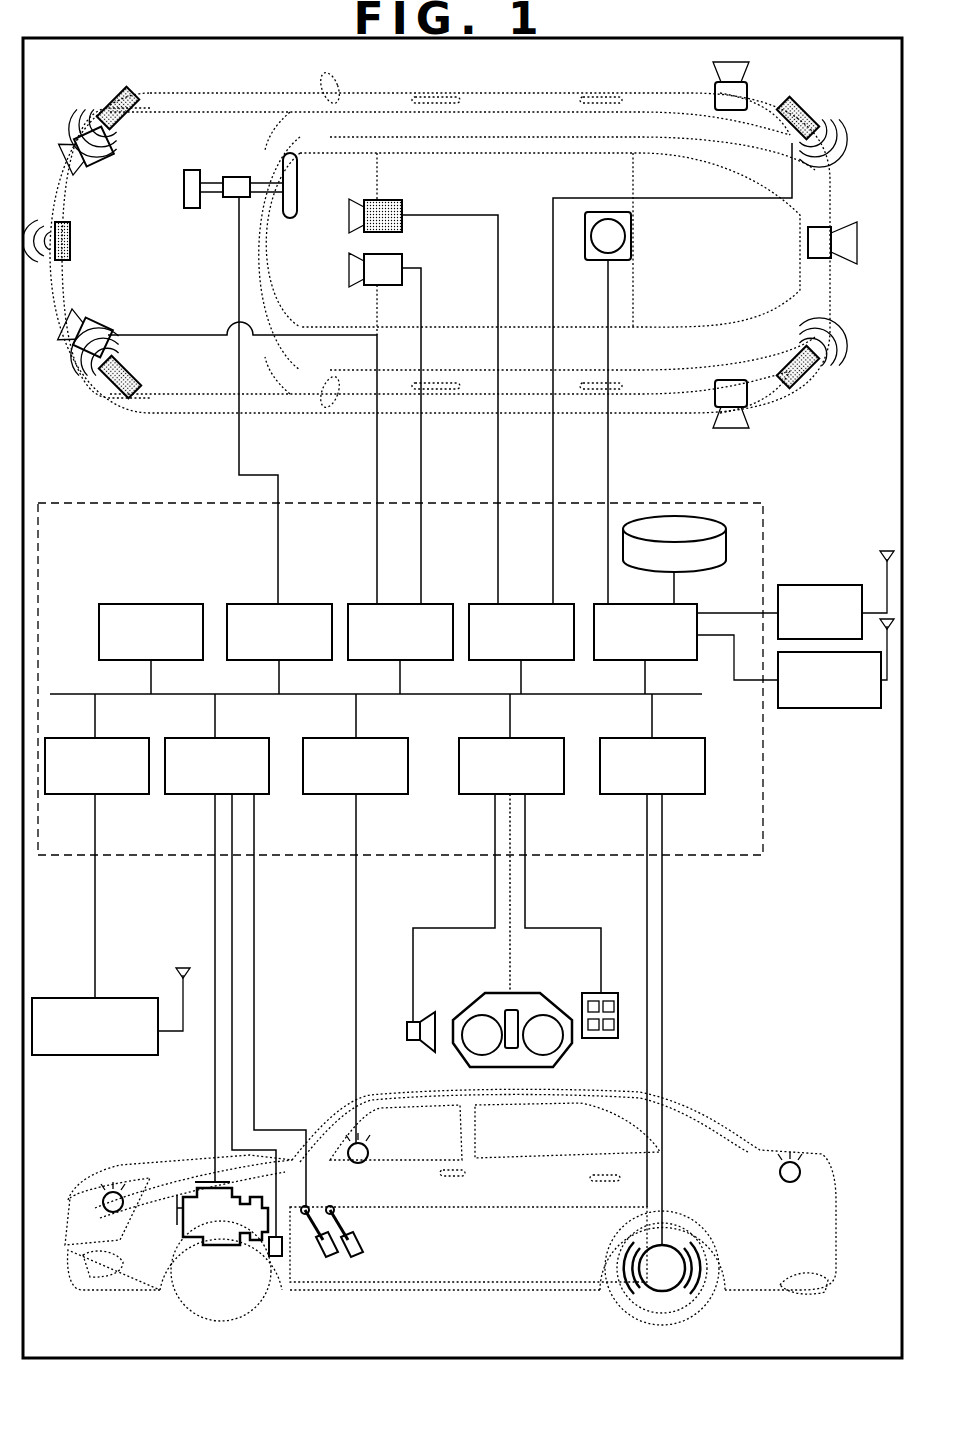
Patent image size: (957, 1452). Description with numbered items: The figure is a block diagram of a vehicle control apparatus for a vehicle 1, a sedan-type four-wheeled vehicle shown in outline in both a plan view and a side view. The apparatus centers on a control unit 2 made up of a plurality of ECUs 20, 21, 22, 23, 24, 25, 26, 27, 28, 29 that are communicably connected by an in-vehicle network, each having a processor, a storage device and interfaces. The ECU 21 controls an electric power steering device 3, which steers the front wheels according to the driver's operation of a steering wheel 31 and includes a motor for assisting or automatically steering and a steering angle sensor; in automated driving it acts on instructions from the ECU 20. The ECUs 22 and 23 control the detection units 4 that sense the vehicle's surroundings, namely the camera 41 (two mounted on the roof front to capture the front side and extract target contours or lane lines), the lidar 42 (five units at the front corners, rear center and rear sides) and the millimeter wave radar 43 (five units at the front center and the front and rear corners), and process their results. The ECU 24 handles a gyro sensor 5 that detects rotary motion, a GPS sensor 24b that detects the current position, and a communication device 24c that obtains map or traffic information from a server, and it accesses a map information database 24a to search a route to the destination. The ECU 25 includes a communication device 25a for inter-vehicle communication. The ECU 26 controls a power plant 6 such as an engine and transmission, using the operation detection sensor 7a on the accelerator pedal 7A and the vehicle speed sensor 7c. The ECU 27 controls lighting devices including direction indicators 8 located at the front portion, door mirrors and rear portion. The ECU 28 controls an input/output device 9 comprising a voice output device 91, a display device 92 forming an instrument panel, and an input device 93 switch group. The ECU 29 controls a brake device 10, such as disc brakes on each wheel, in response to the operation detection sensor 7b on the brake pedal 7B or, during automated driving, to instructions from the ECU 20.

The vehicle 1 is at (840, 150).
The control unit 2 is at (763, 855).
The electric power steering device 3 is at (192, 208).
The steering wheel 31 is at (290, 218).
The external sensor group 4 is at (78, 100).
The detection unit (camera) 41 is at (402, 228).
The detection unit (lidar) 42 is at (106, 168).
The detection unit (millimeter wave radar) 43 is at (128, 118).
The gyro sensor 5 is at (631, 232).
The power plant 6 is at (188, 1188).
The operation detection sensor 7a is at (347, 1186).
The accelerator pedal 7A is at (330, 1255).
The operation detection sensor 7b is at (374, 1217).
The brake pedal 7B is at (360, 1245).
The vehicle speed sensor 7c is at (276, 1256).
The direction indicator 8 is at (104, 1196).
The input/output device 9 is at (501, 1040).
The voice output device 91 is at (407, 1030).
The display device 92 is at (470, 1000).
The input device 93 is at (595, 1038).
The brake device 10 is at (665, 1291).
The ECU 20 is at (183, 604).
The ECU 21 is at (307, 604).
The ECU 22 is at (400, 604).
The ECU 23 is at (526, 604).
The ECU 24 is at (594, 604).
The map information database 24a is at (676, 515).
The GPS sensor 24b is at (836, 585).
The communication device 24c is at (830, 708).
The ECU 25 is at (126, 794).
The communication device 25a is at (97, 1055).
The ECU 26 is at (196, 794).
The ECU 27 is at (385, 794).
The ECU 28 is at (550, 794).
The ECU 29 is at (685, 794).